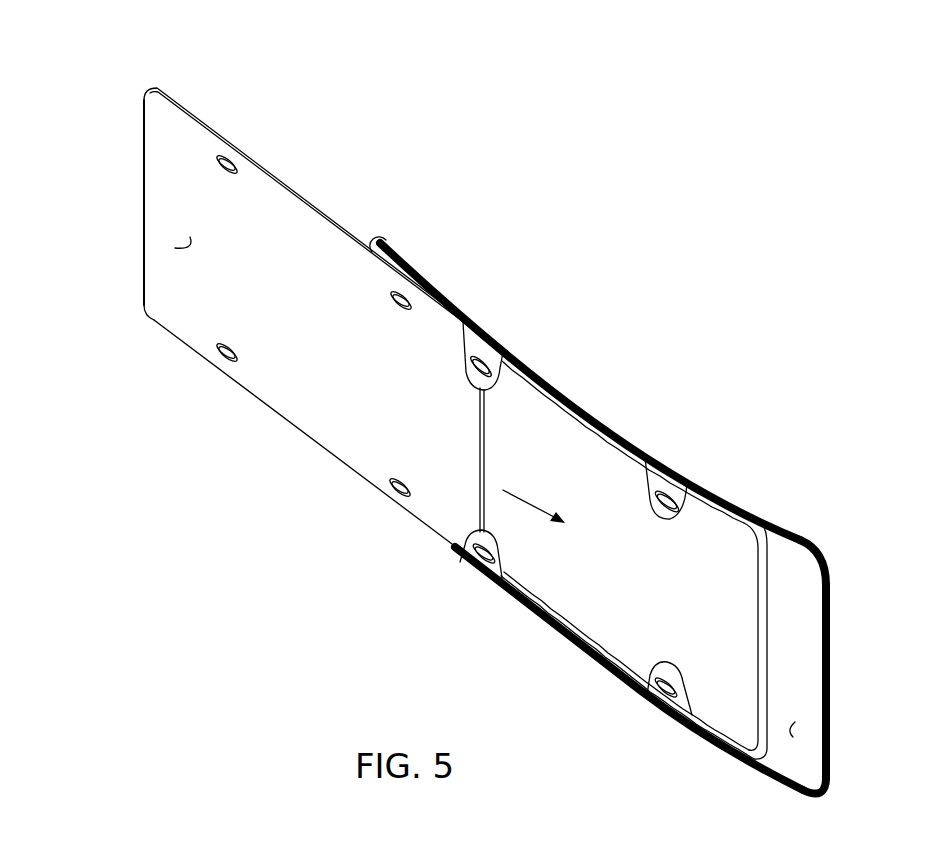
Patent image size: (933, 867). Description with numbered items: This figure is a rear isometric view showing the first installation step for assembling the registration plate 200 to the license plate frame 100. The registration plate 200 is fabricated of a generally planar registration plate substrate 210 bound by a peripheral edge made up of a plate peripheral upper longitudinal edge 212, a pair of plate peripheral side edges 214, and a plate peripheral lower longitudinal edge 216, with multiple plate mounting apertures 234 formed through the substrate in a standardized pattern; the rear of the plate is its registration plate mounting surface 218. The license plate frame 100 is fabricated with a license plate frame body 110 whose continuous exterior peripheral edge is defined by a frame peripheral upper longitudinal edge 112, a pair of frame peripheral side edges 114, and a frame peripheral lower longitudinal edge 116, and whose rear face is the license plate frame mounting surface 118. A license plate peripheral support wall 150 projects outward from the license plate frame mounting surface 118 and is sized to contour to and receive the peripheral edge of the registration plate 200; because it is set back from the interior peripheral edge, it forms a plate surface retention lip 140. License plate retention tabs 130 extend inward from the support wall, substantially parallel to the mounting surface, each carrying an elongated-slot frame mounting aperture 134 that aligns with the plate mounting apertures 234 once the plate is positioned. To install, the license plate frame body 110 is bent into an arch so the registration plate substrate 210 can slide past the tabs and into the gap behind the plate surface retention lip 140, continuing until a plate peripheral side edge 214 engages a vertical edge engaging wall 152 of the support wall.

The license plate frame 100 is at (726, 400).
The license plate frame body 110 is at (829, 563).
The frame peripheral upper longitudinal edge 112 is at (587, 410).
The frame peripheral side edge 114 is at (833, 687).
The frame peripheral lower longitudinal edge 116 is at (561, 655).
The license plate frame mounting surface 118 is at (793, 737).
The license plate retention tab 130 is at (497, 388).
The frame mounting aperture 134 is at (476, 358).
The plate surface retention lip 140 is at (615, 445).
The license plate peripheral support wall 150 is at (772, 655).
The vertical edge engaging wall 152 is at (700, 745).
The registration plate 200 is at (134, 66).
The registration plate substrate 210 is at (148, 310).
The plate peripheral upper longitudinal edge 212 is at (300, 193).
The plate peripheral side edge 214 is at (145, 188).
The plate peripheral lower longitudinal edge 216 is at (289, 430).
The registration plate mounting surface 218 is at (175, 248).
The plate mounting aperture 234 is at (230, 155).